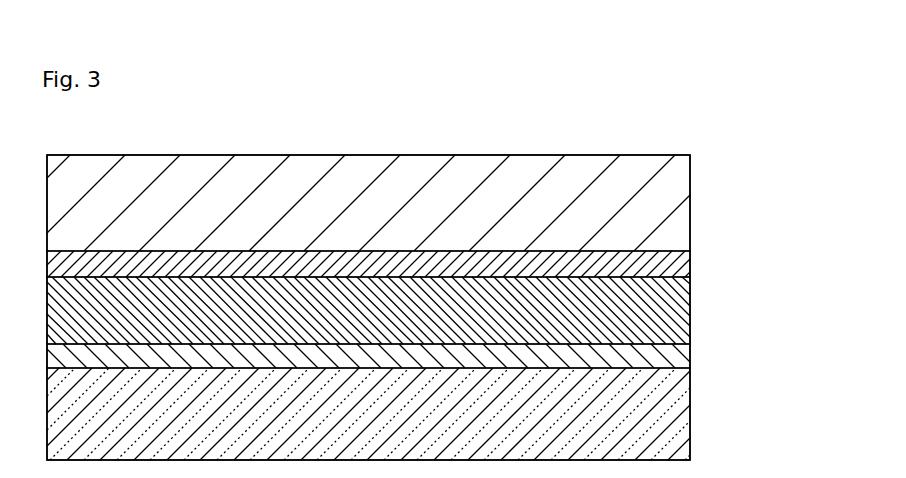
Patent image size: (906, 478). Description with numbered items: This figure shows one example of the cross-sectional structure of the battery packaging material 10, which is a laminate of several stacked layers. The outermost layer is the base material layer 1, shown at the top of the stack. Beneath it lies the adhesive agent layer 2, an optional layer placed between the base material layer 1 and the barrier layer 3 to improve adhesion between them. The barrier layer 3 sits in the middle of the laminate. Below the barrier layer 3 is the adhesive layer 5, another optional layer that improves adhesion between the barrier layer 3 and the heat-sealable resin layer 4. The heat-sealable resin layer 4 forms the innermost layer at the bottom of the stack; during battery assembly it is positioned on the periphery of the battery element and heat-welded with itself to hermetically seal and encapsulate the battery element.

The battery packaging material 10 is at (642, 133).
The base material layer 1 is at (690, 202).
The adhesive agent layer 2 is at (690, 267).
The barrier layer 3 is at (690, 320).
The adhesive layer 5 is at (690, 362).
The heat-sealable resin layer 4 is at (690, 410).